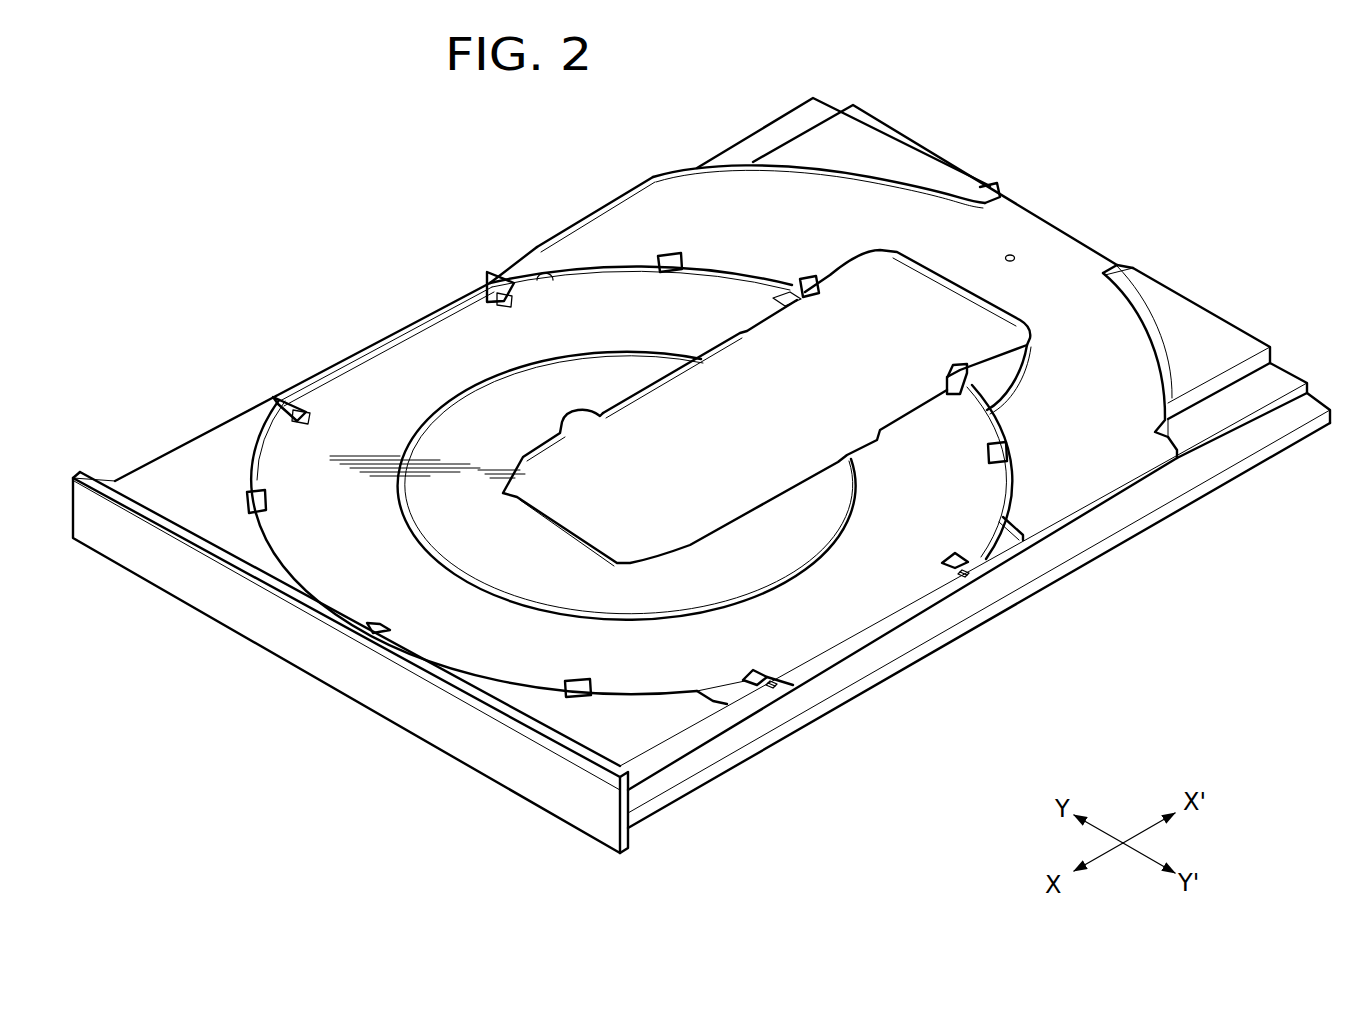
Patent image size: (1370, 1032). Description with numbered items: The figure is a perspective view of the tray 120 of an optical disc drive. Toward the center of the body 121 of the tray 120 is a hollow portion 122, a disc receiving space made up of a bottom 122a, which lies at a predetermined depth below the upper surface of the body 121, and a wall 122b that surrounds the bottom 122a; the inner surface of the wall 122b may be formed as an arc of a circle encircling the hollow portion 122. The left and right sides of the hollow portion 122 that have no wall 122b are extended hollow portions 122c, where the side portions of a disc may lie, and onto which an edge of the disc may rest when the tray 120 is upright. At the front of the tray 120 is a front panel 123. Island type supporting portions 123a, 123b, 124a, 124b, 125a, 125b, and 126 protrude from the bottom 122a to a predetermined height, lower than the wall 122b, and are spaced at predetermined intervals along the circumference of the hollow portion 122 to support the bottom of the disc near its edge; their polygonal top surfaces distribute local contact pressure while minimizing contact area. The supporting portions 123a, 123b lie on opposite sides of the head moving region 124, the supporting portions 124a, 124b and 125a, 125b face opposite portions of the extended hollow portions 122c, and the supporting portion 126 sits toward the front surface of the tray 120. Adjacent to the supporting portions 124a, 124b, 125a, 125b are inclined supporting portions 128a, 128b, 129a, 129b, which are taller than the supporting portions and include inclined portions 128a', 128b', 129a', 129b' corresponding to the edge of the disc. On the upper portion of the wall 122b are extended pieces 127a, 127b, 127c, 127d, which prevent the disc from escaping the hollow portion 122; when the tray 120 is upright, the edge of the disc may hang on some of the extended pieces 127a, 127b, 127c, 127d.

The tray 120 is at (268, 268).
The body 121 is at (206, 440).
The hollow portion 122 is at (490, 162).
The bottom 122a is at (453, 337).
The wall 122b is at (537, 250).
The extended hollow portions 122c is at (386, 355).
The front panel 123 is at (367, 693).
The supporting portion 123a is at (800, 297).
The supporting portion 123b is at (952, 386).
The head moving region 124 is at (760, 438).
The supporting portion 124a is at (305, 416).
The supporting portion 124b is at (512, 290).
The supporting portion 125a is at (753, 668).
The supporting portion 125b is at (953, 555).
The supporting portion 126 is at (375, 620).
The extended piece 127a is at (670, 255).
The extended piece 127b is at (250, 497).
The extended piece 127c is at (578, 680).
The extended piece 127d is at (1003, 447).
The inclined supporting portion 128a is at (279, 361).
The inclined portion 128a' is at (250, 384).
The inclined supporting portion 128b is at (485, 249).
The inclined portion 128b' is at (464, 266).
The inclined supporting portion 129a is at (815, 736).
The inclined portion 129a' is at (771, 684).
The inclined supporting portion 129b is at (1016, 625).
The inclined portion 129b' is at (963, 573).